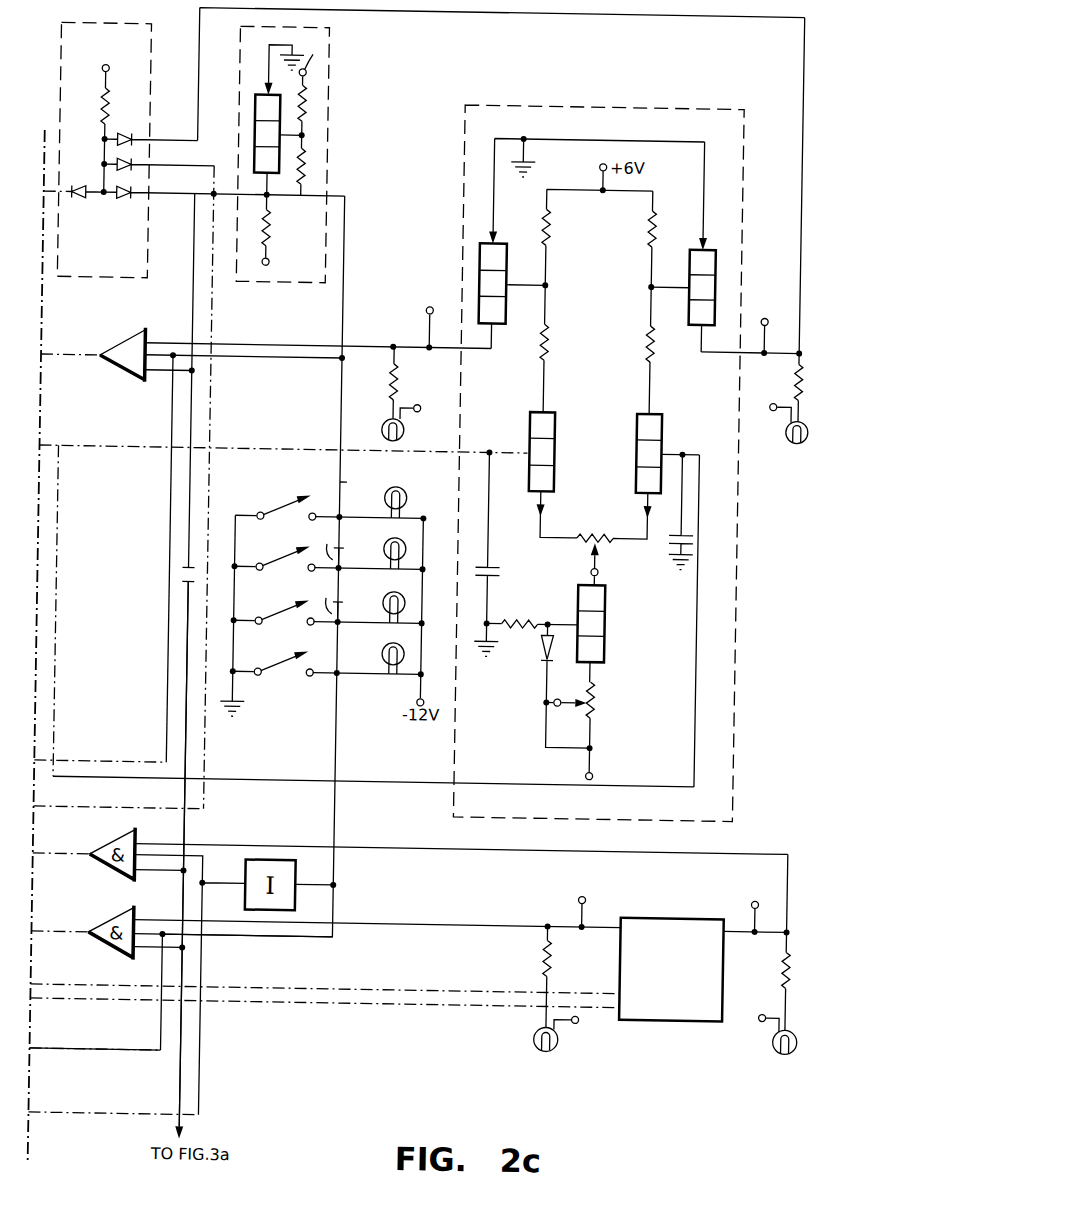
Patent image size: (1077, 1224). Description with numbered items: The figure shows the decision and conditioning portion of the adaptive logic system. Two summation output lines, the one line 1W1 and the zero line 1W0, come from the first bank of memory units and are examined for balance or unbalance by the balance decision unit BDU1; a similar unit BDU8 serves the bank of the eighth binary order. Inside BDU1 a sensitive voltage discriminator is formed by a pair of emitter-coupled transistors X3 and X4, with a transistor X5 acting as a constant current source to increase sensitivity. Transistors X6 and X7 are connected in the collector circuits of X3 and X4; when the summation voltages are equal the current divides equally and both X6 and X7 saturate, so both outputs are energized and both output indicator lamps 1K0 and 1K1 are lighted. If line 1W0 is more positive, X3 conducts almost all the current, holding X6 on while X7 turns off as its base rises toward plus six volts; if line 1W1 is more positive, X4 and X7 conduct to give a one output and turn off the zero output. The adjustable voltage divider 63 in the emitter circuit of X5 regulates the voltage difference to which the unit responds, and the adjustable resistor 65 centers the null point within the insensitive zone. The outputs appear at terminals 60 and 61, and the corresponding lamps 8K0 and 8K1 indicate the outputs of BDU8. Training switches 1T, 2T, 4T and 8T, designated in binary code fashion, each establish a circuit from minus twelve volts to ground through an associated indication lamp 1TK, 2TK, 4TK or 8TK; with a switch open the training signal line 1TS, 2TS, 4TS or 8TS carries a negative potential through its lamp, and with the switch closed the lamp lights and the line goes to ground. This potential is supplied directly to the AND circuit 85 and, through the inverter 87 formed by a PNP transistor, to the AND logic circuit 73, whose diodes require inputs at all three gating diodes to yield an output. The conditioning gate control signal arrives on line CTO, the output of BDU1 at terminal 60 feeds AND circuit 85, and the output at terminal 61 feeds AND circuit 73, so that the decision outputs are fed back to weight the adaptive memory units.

The AND logic circuit 73 is at (97, 288).
The AND circuit 85 is at (115, 351).
The inverter 87 is at (322, 100).
The output terminal 60 is at (428, 312).
The output terminal 61 is at (775, 320).
The adjustable voltage divider 63 is at (600, 709).
The adjustable resistor 65 is at (597, 531).
The transistor X3 is at (552, 466).
The transistor X4 is at (634, 449).
The transistor X5 is at (605, 600).
The transistor X6 is at (500, 242).
The transistor X7 is at (684, 246).
The output indicator lamp 1K0 is at (379, 430).
The output indicator lamp 1K1 is at (788, 444).
The output indicator lamp 8K0 is at (541, 1038).
The output indicator lamp 8K1 is at (780, 1037).
The indication lamp 1TK is at (402, 490).
The indication lamp 2TK is at (383, 550).
The indication lamp 4TK is at (383, 602).
The indication lamp 8TK is at (383, 652).
The training switch 1T is at (278, 510).
The training switch 2T is at (278, 561).
The training switch 4T is at (278, 615).
The training switch 8T is at (278, 666).
The training signal line 1TS is at (368, 497).
The training signal line 2TS is at (358, 550).
The training signal line 4TS is at (358, 604).
The training signal line 8TS is at (336, 708).
The summation output line 1W0 is at (138, 452).
The summation output line 1W1 is at (56, 728).
The conditioning gate control line CTO is at (189, 832).
The balance decision unit BDU1 is at (520, 104).
The balance decision unit BDU8 is at (648, 914).